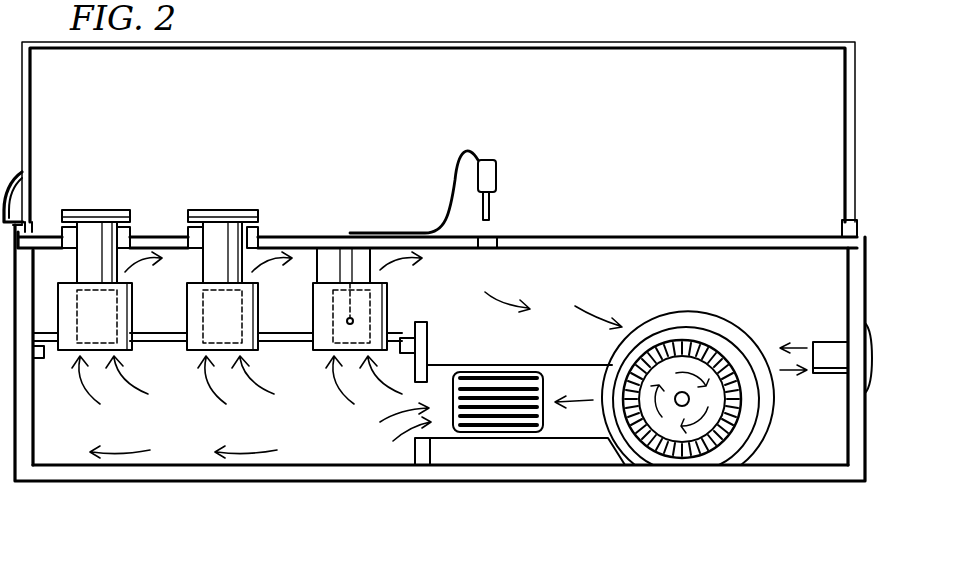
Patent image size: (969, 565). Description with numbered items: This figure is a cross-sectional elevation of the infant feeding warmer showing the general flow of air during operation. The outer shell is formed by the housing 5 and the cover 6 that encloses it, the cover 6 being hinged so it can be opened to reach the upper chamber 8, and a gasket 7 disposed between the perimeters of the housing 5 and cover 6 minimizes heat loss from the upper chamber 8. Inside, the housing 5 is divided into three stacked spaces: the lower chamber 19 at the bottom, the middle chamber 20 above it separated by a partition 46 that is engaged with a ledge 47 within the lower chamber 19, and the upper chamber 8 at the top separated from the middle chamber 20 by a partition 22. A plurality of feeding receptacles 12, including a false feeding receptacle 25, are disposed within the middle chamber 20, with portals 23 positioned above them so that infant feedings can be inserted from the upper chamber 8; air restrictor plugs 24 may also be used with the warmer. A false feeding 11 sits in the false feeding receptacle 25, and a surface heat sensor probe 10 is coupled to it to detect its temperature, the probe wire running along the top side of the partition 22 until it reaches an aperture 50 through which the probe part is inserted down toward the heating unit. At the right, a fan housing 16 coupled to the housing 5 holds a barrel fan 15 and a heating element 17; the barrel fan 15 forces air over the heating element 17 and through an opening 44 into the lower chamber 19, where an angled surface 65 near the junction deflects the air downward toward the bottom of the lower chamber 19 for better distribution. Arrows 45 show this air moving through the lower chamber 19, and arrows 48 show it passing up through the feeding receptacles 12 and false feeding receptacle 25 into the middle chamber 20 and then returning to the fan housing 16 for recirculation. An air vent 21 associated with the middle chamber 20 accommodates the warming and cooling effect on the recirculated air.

The housing 5 is at (795, 482).
The cover 6 is at (622, 42).
The gasket 7 is at (840, 228).
The upper chamber 8 is at (439, 116).
The surface heat sensor probe 10 is at (499, 170).
The false feeding 11 is at (338, 253).
The feeding receptacles 12 is at (192, 352).
The barrel fan 15 is at (683, 340).
The fan housing 16 is at (728, 322).
The heating element 17 is at (532, 372).
The lower chamber 19 is at (55, 470).
The middle chamber 20 is at (46, 257).
The air vent 21 is at (820, 342).
The partition 22 is at (668, 236).
The portals 23 is at (262, 236).
The air restrictor plugs 24 is at (205, 210).
The false feeding receptacle 25 is at (393, 310).
The opening 44 is at (405, 430).
The arrows 45 is at (277, 432).
The partition 46 is at (285, 348).
The ledge 47 is at (40, 360).
The arrows 48 is at (158, 268).
The aperture 50 is at (492, 237).
The angled surface 65 is at (438, 372).